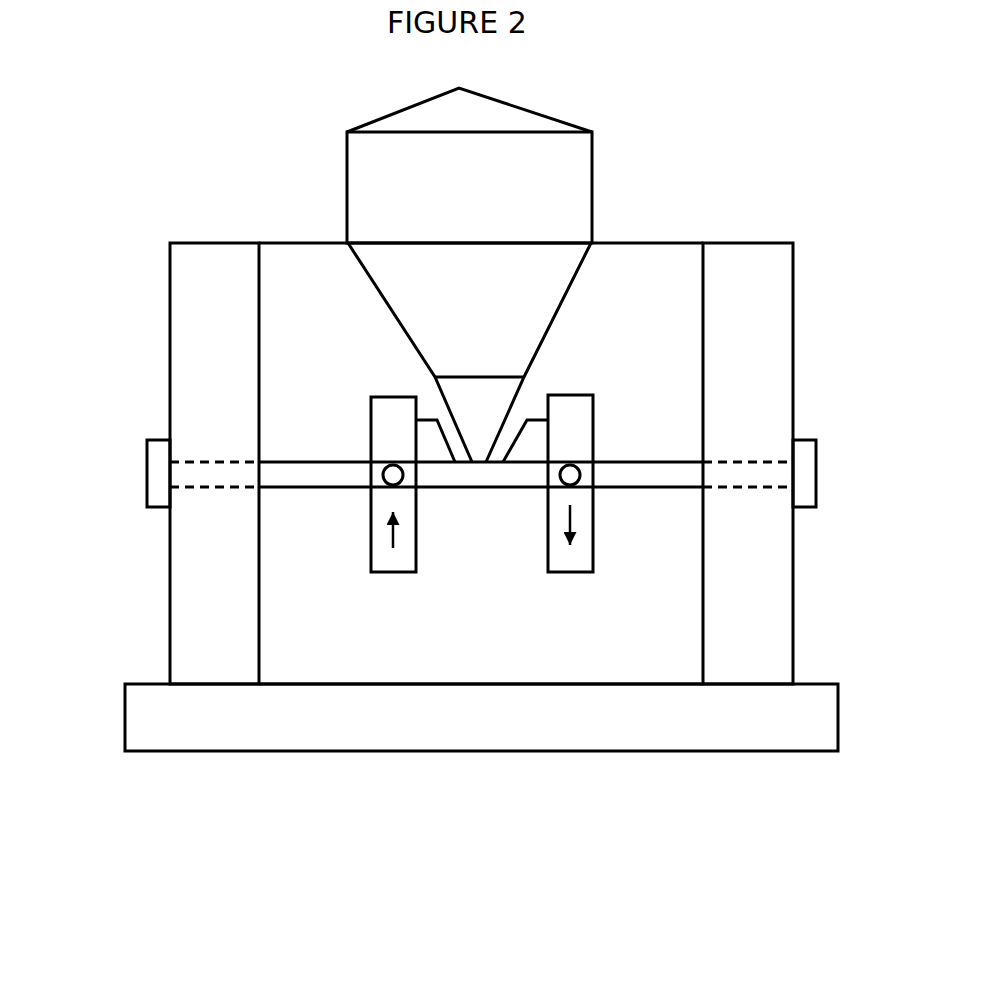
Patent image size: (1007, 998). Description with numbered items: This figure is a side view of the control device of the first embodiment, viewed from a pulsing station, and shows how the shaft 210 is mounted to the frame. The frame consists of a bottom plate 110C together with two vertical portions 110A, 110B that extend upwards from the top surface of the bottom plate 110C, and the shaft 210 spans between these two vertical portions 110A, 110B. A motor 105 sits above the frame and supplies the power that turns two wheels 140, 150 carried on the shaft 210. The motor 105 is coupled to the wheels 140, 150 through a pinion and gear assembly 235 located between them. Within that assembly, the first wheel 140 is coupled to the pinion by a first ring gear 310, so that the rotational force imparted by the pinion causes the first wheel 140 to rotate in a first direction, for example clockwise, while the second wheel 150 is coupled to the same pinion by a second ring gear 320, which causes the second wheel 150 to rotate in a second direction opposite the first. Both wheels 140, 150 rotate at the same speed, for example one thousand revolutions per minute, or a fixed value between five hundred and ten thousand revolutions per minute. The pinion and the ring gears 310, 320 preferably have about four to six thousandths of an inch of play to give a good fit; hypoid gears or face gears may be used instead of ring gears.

The motor 105 is at (578, 172).
The vertical portion 110A is at (192, 330).
The vertical portion 110B is at (772, 348).
The bottom plate 110C is at (592, 728).
The first wheel 140 is at (370, 418).
The second wheel 150 is at (594, 412).
The shaft 210 is at (328, 492).
The pinion and gear assembly 235 is at (478, 408).
The first ring gear 310 is at (527, 308).
The second ring gear 320 is at (530, 425).